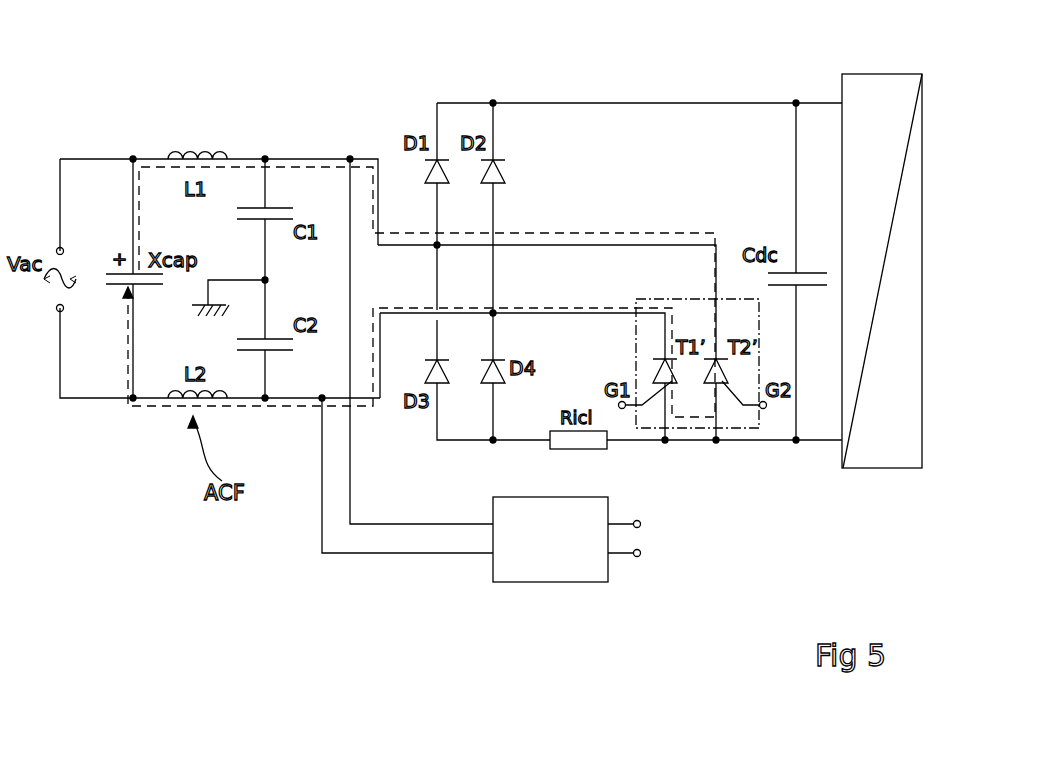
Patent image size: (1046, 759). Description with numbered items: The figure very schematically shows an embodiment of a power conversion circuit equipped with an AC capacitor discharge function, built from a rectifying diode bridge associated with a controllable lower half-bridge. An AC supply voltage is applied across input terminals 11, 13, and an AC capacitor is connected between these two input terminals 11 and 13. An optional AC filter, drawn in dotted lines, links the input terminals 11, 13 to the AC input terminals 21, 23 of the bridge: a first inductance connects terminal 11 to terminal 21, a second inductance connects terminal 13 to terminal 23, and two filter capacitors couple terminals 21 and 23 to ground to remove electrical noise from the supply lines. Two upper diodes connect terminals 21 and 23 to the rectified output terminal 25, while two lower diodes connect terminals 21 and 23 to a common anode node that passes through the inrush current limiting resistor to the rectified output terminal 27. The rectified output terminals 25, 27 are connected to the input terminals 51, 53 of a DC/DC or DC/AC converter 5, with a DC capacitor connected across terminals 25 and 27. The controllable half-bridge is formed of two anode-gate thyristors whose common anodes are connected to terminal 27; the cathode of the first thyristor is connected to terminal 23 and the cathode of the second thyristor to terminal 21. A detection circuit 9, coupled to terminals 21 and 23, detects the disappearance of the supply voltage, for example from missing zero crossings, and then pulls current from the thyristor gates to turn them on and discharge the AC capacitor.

The DC/DC or DC/AC converter 5 is at (885, 74).
The detection circuit 9 is at (582, 584).
The input terminal 11 is at (57, 248).
The input terminal 13 is at (57, 311).
The AC input terminal 21 is at (435, 247).
The AC input terminal 23 is at (496, 311).
The rectified output terminal 25 is at (768, 101).
The rectified output terminal 27 is at (795, 443).
The input terminal of converter 51 is at (840, 101).
The input terminal of converter 53 is at (838, 442).